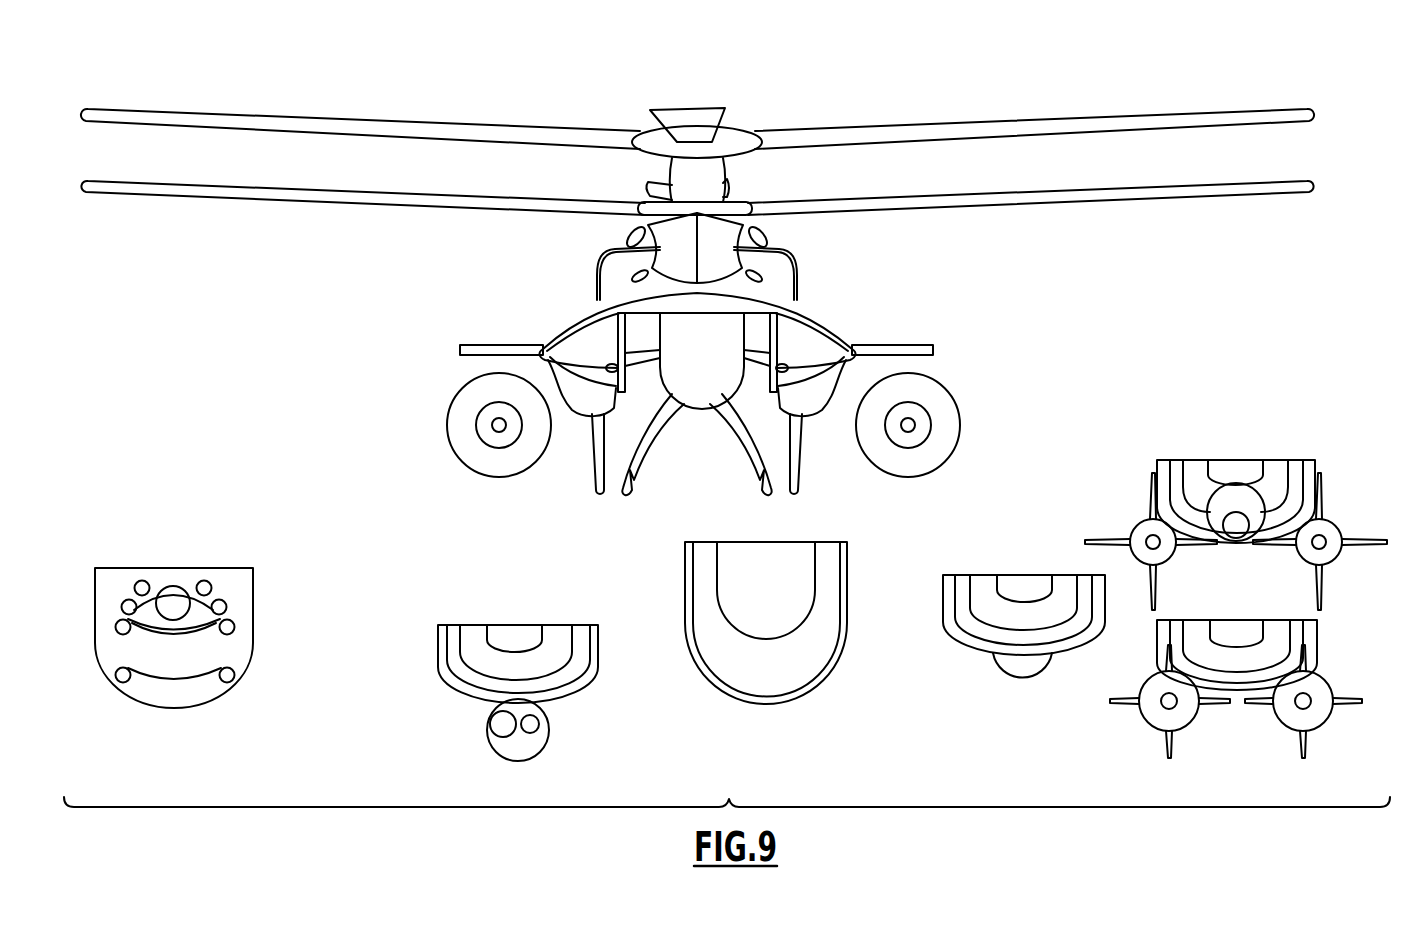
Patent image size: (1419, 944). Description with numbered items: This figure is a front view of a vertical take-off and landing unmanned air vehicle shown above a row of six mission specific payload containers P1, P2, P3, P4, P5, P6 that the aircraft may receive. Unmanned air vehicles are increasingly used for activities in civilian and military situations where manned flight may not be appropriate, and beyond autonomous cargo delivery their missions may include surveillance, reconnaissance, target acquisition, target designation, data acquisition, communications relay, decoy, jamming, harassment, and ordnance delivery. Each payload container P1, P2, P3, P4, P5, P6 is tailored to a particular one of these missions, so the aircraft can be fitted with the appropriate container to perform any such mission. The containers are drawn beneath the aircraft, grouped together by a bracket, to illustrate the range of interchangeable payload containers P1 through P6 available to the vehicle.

The mission specific payload container P1 is at (177, 568).
The mission specific payload container P2 is at (478, 625).
The mission specific payload container P3 is at (827, 573).
The mission specific payload container P4 is at (1012, 582).
The mission specific payload container P5 is at (1277, 460).
The mission specific payload container P6 is at (1310, 635).